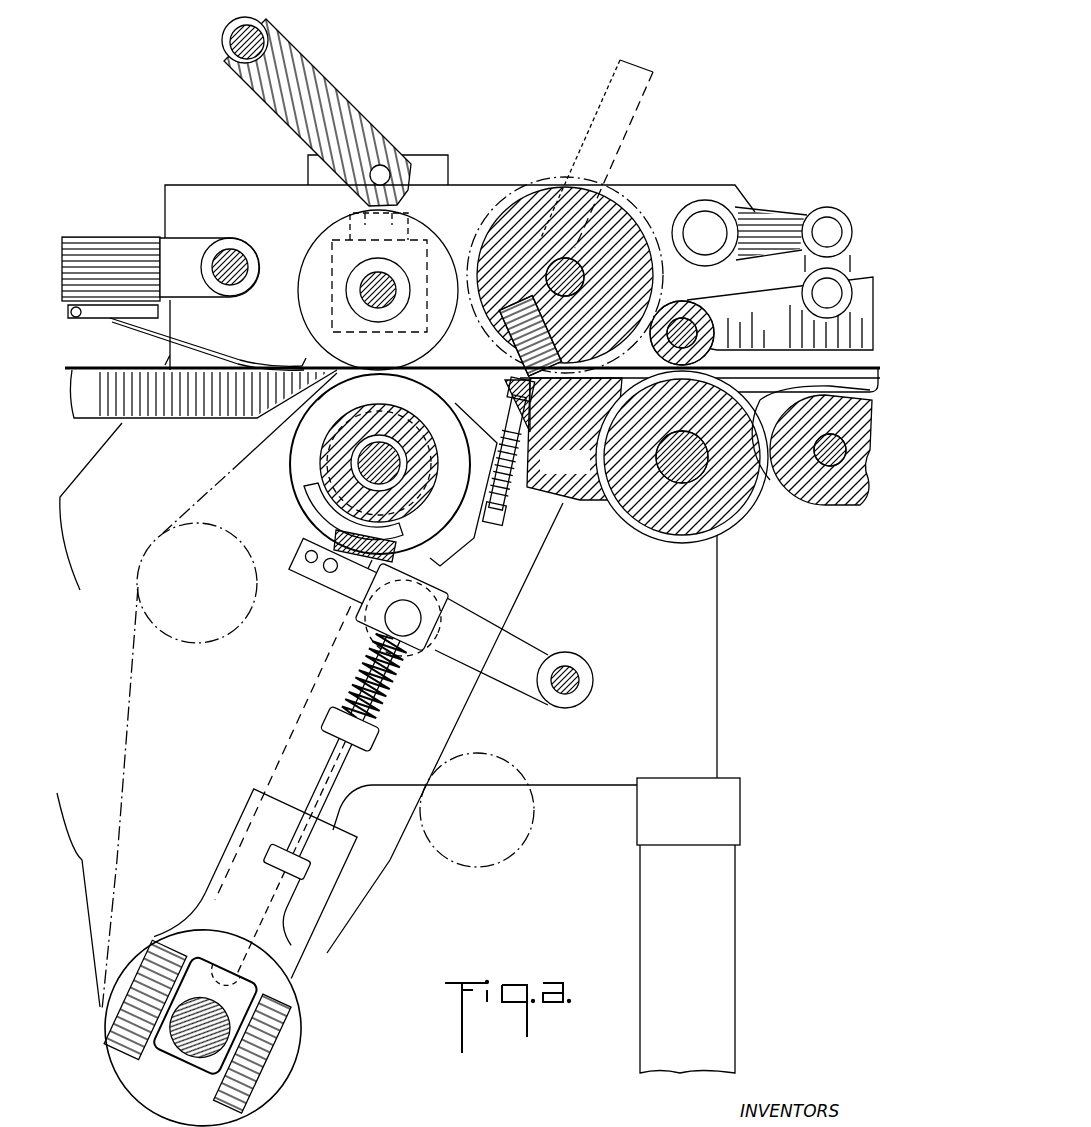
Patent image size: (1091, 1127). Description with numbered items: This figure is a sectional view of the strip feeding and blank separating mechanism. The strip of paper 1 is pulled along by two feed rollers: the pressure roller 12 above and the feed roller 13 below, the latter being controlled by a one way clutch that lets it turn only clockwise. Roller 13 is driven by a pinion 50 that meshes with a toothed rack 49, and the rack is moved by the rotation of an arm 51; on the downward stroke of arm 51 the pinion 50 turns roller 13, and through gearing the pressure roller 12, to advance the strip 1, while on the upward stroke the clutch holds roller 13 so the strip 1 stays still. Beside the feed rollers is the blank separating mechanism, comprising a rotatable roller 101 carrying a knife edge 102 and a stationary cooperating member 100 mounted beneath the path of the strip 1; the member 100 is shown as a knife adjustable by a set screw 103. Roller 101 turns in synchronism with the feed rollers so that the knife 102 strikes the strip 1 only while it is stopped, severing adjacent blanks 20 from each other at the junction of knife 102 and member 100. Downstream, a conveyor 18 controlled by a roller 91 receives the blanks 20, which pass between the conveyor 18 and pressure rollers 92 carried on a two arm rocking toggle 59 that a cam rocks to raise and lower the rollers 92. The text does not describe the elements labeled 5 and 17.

The strip of paper 1 is at (118, 368).
The support post 5 is at (717, 700).
The pressure roller 12 is at (332, 365).
The feed roller 13 is at (300, 483).
The bracket block 17 is at (785, 331).
The conveyor 18 is at (763, 477).
The blanks 20 is at (565, 275).
The toothed rack 49 is at (648, 100).
The pinion 50 is at (335, 458).
The arm 51 is at (245, 830).
The two arm rocking toggle 59 is at (760, 215).
The roller 91 is at (723, 510).
The pressure rollers 92 is at (713, 342).
The cooperating member 100 is at (563, 439).
The rotatable roller 101 is at (537, 222).
The knife edge 102 is at (563, 336).
The set screw 103 is at (512, 522).